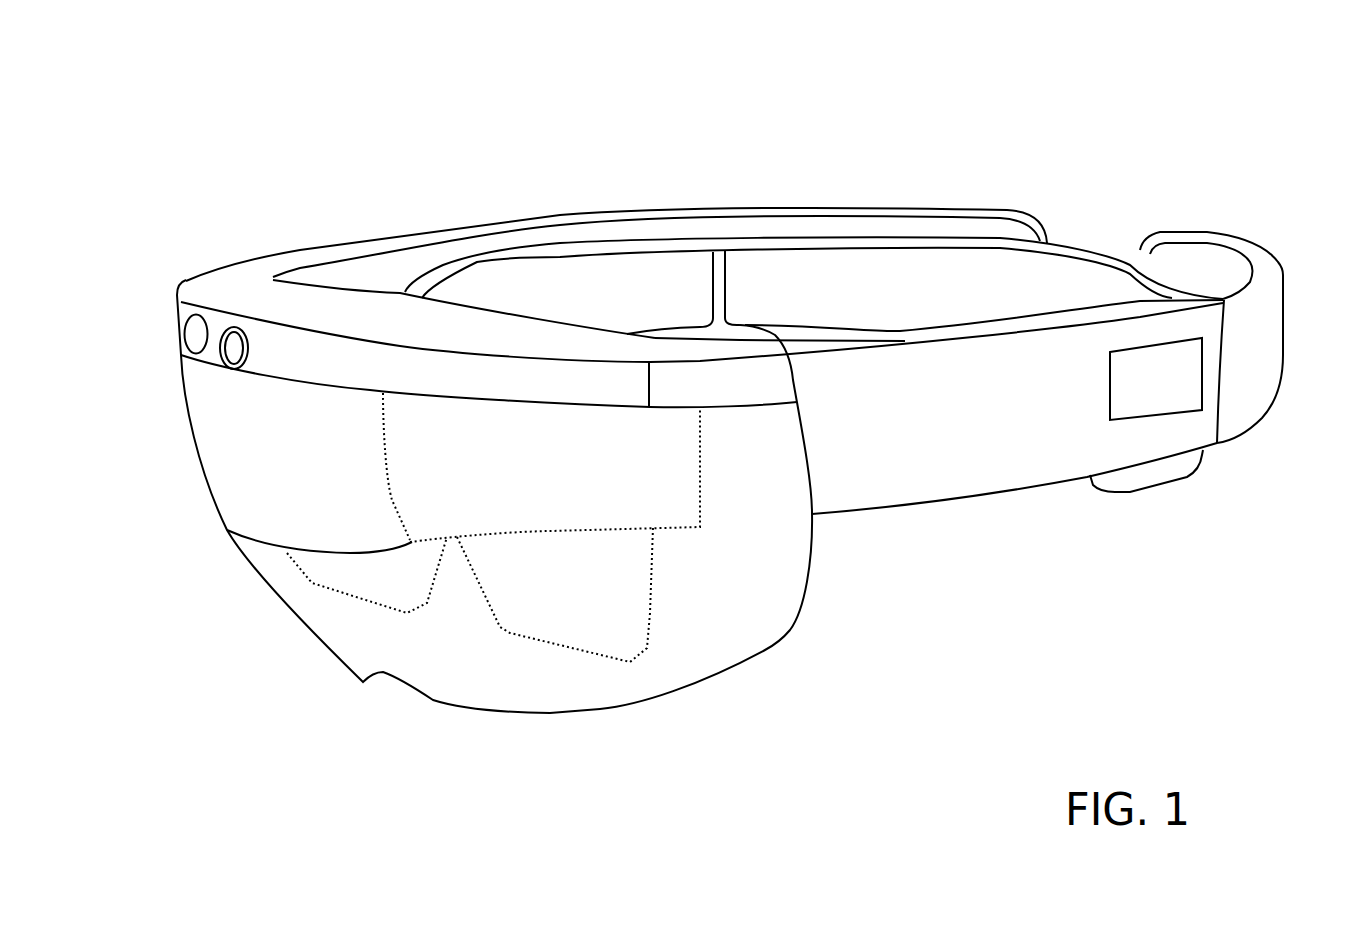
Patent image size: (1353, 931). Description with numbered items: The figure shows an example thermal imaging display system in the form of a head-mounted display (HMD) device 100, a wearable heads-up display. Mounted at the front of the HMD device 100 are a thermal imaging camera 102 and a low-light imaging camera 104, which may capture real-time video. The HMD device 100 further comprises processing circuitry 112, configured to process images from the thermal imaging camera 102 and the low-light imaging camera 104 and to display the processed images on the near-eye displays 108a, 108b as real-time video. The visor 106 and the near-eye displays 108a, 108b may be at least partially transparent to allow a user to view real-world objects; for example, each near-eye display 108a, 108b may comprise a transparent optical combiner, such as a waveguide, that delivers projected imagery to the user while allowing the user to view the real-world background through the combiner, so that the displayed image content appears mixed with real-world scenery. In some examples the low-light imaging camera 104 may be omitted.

The head-mounted display device 100 is at (1158, 142).
The thermal imaging camera 102 is at (183, 328).
The low-light imaging camera 104 is at (238, 328).
The visor 106 is at (163, 432).
The near-eye display 108a is at (630, 635).
The near-eye display 108b is at (417, 596).
The processing circuitry 112 is at (1176, 394).